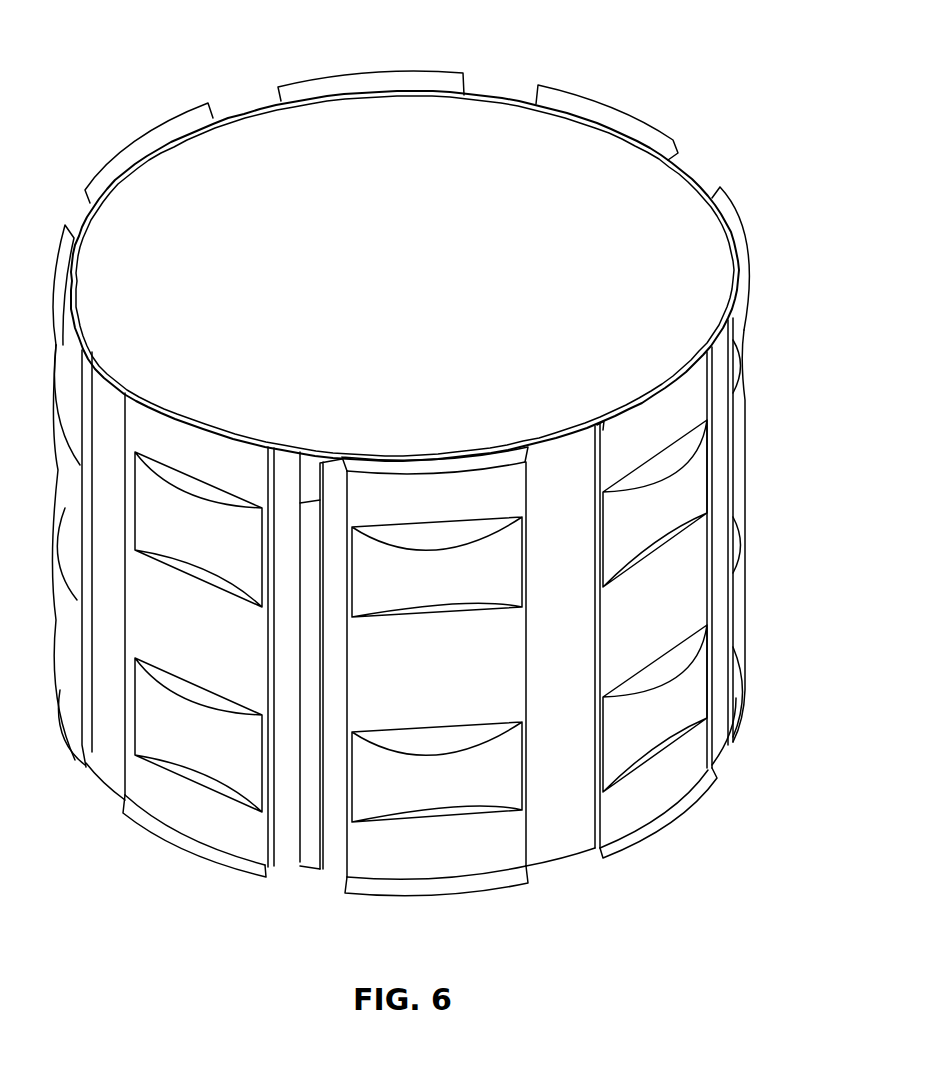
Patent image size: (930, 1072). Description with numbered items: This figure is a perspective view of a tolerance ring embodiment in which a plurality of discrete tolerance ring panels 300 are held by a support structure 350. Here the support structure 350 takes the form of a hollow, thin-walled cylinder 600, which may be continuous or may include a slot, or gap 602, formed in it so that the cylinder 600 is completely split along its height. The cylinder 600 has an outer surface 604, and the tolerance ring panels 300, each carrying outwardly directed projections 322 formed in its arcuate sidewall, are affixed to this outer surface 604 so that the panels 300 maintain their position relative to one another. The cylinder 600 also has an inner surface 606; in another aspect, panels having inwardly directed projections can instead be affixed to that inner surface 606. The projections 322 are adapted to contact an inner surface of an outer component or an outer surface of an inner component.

The inner surface 606 is at (514, 132).
The outer surface 604 is at (720, 442).
The projection 322 is at (678, 663).
The tolerance ring panel 300 is at (716, 602).
The cylinder 600 is at (547, 835).
The support structure 350 is at (548, 873).
The gap 602 is at (310, 850).